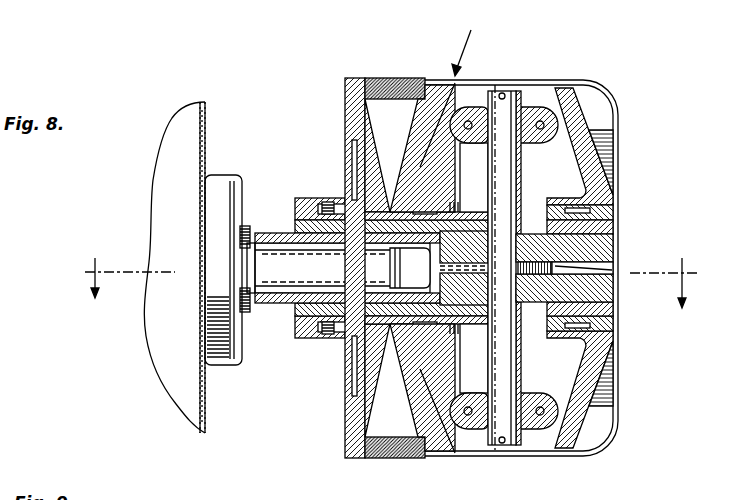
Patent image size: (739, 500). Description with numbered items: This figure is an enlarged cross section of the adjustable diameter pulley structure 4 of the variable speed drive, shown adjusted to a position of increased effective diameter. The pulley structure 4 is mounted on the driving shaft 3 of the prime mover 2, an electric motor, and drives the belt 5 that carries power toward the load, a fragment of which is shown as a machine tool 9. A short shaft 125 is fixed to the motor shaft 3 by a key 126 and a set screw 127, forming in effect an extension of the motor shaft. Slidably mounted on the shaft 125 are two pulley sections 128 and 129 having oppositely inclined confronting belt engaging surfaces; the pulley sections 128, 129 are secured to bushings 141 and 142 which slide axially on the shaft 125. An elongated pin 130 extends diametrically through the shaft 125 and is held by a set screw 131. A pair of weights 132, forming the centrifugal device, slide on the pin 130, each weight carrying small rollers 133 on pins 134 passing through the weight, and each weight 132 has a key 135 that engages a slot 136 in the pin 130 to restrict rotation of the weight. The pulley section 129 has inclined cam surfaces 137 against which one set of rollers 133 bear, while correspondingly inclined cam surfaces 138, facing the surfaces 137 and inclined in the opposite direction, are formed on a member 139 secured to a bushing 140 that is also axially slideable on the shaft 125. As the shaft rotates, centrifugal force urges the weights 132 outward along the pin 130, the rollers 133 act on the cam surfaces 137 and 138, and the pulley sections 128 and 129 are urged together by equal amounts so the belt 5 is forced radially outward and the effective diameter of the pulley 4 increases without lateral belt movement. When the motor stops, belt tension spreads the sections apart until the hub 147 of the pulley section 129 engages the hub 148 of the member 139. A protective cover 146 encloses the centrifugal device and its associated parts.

The prime mover 2 is at (206, 152).
The driving shaft 3 is at (285, 275).
The adjustable diameter pulley structure 4 is at (486, 25).
The belt 5 is at (490, 247).
The machine tool 9 is at (380, 287).
The short shaft 125 is at (600, 247).
The key 126 is at (328, 241).
The set screw 127 is at (313, 330).
The pulley section 128 is at (345, 90).
The pulley section 129 is at (426, 80).
The elongated pin 130 is at (518, 96).
The set screw 131 is at (555, 272).
The weights 132 is at (470, 120).
The rollers 133 is at (437, 160).
The pins 134 is at (541, 121).
The key 135 is at (487, 152).
The slot 136 is at (488, 184).
The inclined cam surfaces 137 is at (388, 163).
The inclined cam surfaces 138 is at (585, 162).
The member 139 is at (616, 206).
The bushing 140 is at (616, 221).
The bushing 141 is at (295, 222).
The bushing 142 is at (405, 322).
The protective cover 146 is at (620, 135).
The hub 147 is at (482, 333).
The hub 148 is at (585, 326).